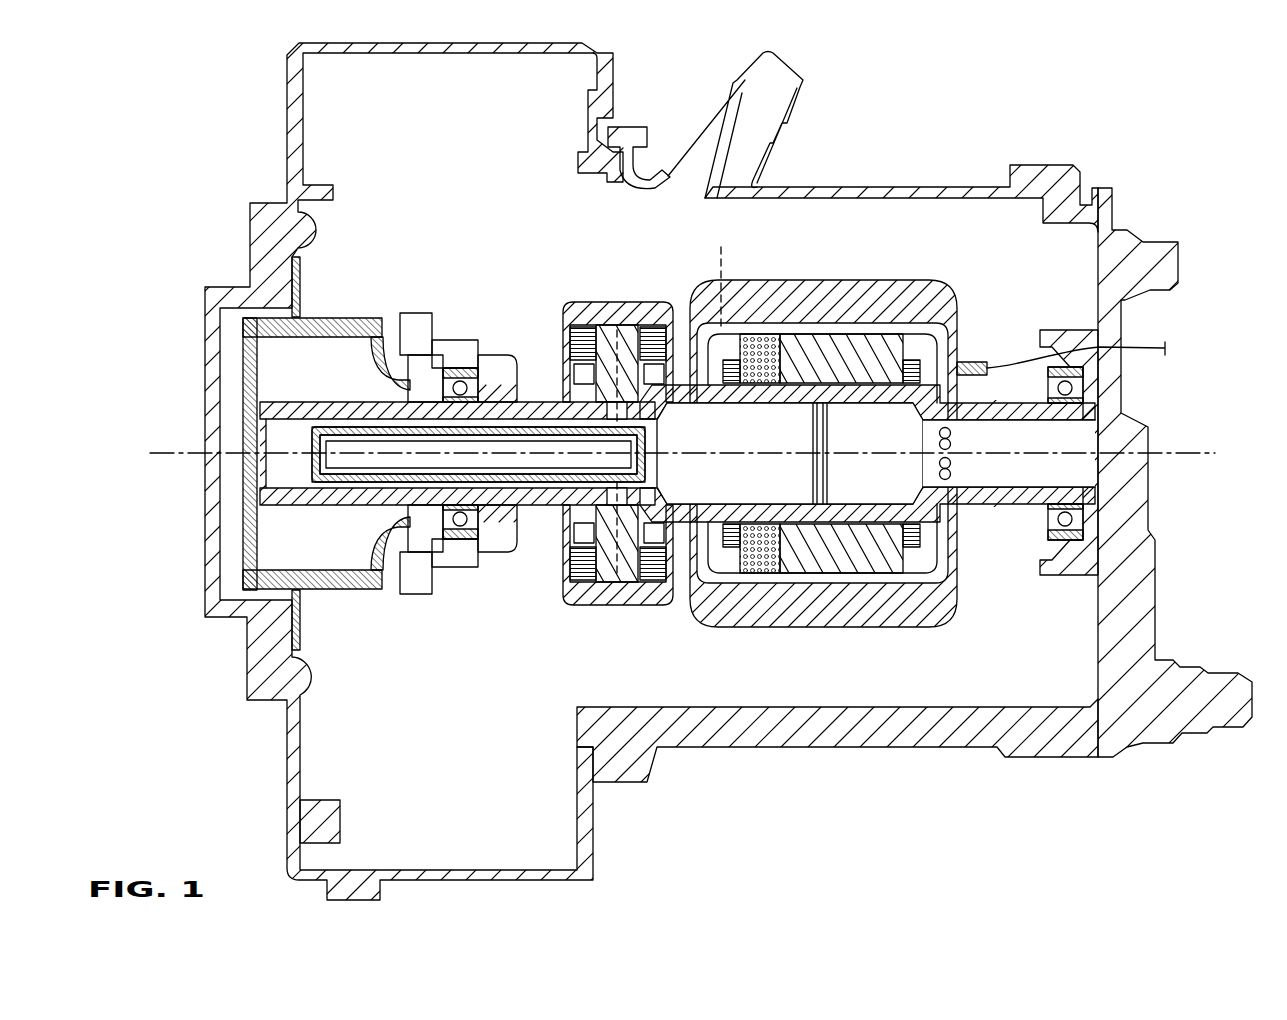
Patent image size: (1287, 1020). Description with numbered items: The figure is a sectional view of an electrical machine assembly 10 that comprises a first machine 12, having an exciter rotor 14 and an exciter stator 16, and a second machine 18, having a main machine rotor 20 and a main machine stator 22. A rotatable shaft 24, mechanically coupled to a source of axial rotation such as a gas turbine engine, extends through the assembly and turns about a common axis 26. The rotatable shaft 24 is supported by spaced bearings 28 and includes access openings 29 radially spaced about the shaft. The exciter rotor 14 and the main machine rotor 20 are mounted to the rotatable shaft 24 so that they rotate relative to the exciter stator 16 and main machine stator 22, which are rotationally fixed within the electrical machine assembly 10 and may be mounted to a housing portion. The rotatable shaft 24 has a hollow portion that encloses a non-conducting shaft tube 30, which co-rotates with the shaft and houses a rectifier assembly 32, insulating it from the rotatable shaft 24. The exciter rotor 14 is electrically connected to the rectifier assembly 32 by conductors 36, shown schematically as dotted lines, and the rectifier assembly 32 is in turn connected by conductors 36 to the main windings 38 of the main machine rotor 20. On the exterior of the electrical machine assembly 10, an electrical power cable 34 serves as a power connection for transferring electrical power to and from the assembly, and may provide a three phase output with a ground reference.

The electrical machine assembly 10 is at (912, 97).
The first machine 12 is at (682, 338).
The exciter rotor 14 is at (615, 337).
The exciter stator 16 is at (621, 337).
The second machine 18 is at (960, 533).
The main machine rotor 20 is at (862, 348).
The main machine stator 22 is at (877, 617).
The rotatable shaft 24 is at (297, 483).
The common axis 26 is at (701, 453).
The spaced bearings 28 is at (455, 522).
The access openings 29 is at (600, 405).
The shaft tube 30 is at (303, 437).
The rectifier assembly 32 is at (307, 451).
The electrical power cable 34 is at (975, 360).
The conductors 36 is at (562, 342).
The main windings 38 is at (757, 340).